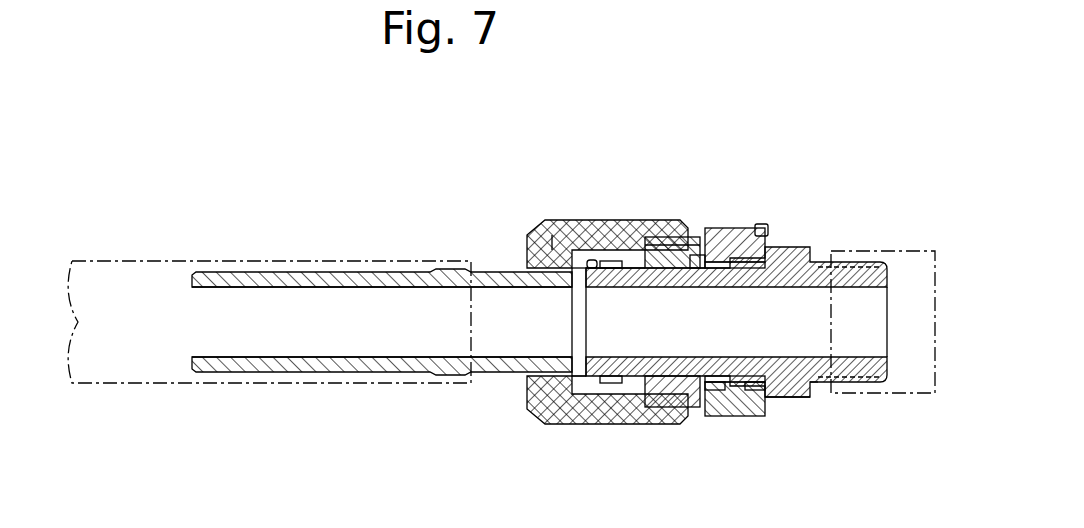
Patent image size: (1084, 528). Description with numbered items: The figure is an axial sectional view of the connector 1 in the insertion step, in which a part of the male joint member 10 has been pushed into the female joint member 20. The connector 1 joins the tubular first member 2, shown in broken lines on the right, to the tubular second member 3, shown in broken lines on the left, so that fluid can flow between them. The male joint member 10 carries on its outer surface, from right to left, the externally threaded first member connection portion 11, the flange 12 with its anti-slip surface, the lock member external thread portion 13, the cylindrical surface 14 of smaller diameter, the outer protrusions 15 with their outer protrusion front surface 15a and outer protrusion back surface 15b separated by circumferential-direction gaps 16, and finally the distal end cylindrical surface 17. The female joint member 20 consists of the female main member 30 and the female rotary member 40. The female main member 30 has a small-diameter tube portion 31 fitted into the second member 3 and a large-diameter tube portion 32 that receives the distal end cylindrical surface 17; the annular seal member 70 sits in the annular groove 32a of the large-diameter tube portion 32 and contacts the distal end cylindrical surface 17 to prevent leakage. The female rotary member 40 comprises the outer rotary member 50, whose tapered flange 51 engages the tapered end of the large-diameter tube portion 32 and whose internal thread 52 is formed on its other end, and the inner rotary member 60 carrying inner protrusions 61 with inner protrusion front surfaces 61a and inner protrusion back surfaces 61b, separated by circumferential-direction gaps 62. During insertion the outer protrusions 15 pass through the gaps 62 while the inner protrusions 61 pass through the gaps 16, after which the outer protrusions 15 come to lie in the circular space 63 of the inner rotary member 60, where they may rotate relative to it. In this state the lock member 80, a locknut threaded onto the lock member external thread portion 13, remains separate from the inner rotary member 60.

The connector 1 is at (228, 193).
The first member 2 is at (905, 252).
The second member 3 is at (118, 262).
The male joint member 10 is at (826, 250).
The first member connection portion 11 is at (870, 380).
The flange 12 is at (820, 386).
The lock member external thread portion 13 is at (790, 398).
The cylindrical surface 14 is at (750, 388).
The outer protrusions 15 is at (648, 270).
The outer protrusion front surface 15a is at (610, 266).
The outer protrusion back surface 15b is at (700, 268).
The circumferential-direction gap 16 is at (615, 380).
The distal end cylindrical surface 17 is at (565, 245).
The female joint member 20 is at (497, 256).
The female main member 30 is at (340, 272).
The small-diameter tube portion 31 is at (300, 372).
The large-diameter tube portion 32 is at (600, 384).
The annular groove 32a is at (590, 380).
The female rotary member 40 is at (733, 128).
The outer rotary member 50 is at (668, 262).
The flange 51 is at (530, 252).
The internal thread 52 is at (712, 296).
The inner rotary member 60 is at (720, 250).
The inner protrusions 61 is at (700, 376).
The inner protrusion front surface 61a is at (720, 378).
The inner protrusion back surface 61b is at (685, 380).
The circumferential-direction gap 62 is at (745, 272).
The circular space 63 is at (660, 378).
The annular seal member 70 is at (592, 268).
The lock member 80 is at (762, 226).